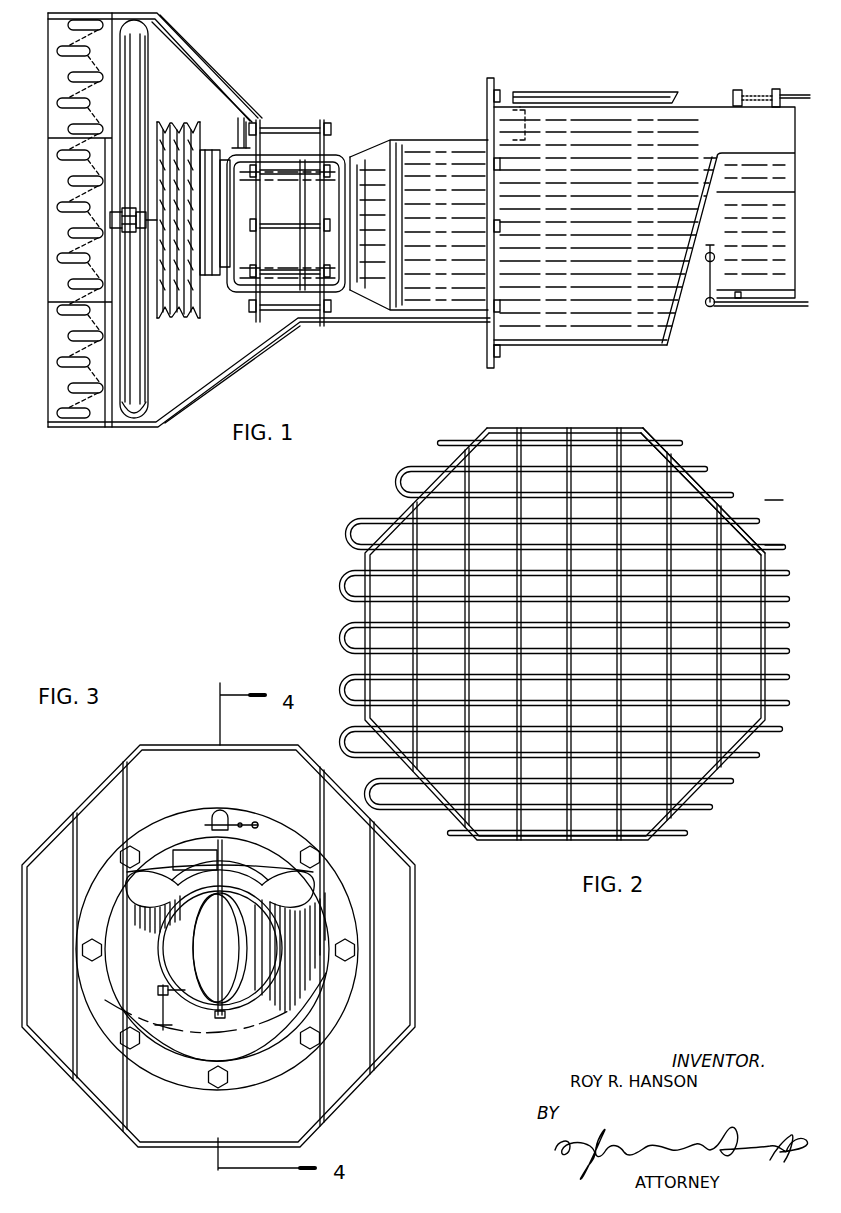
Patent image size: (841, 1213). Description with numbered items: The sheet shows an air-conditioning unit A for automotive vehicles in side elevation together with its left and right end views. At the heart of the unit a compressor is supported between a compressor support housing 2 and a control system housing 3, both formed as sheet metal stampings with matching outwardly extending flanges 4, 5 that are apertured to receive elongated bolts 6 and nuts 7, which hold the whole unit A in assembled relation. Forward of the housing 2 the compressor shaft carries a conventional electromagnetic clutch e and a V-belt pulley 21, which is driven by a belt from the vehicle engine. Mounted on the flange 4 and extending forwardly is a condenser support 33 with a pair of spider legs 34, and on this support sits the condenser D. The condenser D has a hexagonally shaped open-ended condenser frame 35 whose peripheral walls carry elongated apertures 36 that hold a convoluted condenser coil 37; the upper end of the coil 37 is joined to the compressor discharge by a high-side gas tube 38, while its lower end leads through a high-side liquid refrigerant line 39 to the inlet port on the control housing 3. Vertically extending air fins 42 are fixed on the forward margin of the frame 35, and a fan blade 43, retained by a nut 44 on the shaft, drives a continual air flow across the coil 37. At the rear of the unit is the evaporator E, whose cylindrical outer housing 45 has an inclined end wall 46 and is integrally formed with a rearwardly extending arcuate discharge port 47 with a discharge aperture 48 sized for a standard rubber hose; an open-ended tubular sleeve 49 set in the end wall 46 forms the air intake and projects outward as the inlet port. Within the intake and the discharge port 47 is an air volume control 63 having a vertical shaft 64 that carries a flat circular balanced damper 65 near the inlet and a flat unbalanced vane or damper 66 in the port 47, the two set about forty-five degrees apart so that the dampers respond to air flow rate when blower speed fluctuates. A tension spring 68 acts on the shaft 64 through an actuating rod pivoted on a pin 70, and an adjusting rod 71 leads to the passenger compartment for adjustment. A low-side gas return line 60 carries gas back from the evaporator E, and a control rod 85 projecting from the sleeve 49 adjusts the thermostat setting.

In FIG. 1, the compressor support housing 2 is at (237, 290).
In FIG. 1, the control system housing 3 is at (423, 138).
In FIG. 1, the outwardly extending flange 4 is at (258, 120).
In FIG. 1, the outwardly extending flange 5 is at (319, 120).
In FIG. 1, the elongated bolts 6 is at (291, 128).
In FIG. 1, the nuts 7 is at (330, 127).
In FIG. 1, the V-belt pulley 21 is at (173, 307).
In FIG. 1, the condenser support 33 is at (98, 427).
In FIG. 2, the condenser support 33 is at (498, 424).
In FIG. 3, the condenser support 33 is at (363, 1087).
In FIG. 1, the spider legs 34 is at (243, 100).
In FIG. 3, the spider legs 34 is at (213, 1127).
In FIG. 2, the condenser frame 35 is at (557, 428).
In FIG. 1, the elongated apertures 36 is at (127, 427).
In FIG. 2, the elongated apertures 36 is at (685, 467).
In FIG. 2, the convoluted condenser coil 37 is at (733, 497).
In FIG. 1, the high-side gas tube 38 is at (215, 62).
In FIG. 1, the high-side liquid refrigerant line 39 is at (217, 373).
In FIG. 2, the air fins 42 is at (517, 437).
In FIG. 1, the fan blade 43 is at (147, 393).
In FIG. 1, the nut 44 is at (140, 243).
In FIG. 1, the cylindrical outer housing 45 is at (615, 322).
In FIG. 3, the cylindrical outer housing 45 is at (245, 967).
In FIG. 1, the inclined end wall 46 is at (678, 315).
In FIG. 3, the inclined end wall 46 is at (313, 993).
In FIG. 1, the discharge port 47 is at (743, 132).
In FIG. 3, the discharge port 47 is at (307, 877).
In FIG. 3, the discharge aperture 48 is at (270, 857).
In FIG. 1, the tubular sleeve 49 is at (767, 275).
In FIG. 3, the tubular sleeve 49 is at (160, 977).
In FIG. 1, the low-side gas return line 60 is at (600, 92).
In FIG. 3, the air volume control 63 is at (313, 997).
In FIG. 1, the vertical shaft 64 is at (735, 97).
In FIG. 3, the vertical shaft 64 is at (192, 852).
In FIG. 3, the flat circular balanced damper 65 is at (197, 948).
In FIG. 3, the flat unbalanced vane or damper 66 is at (212, 862).
In FIG. 1, the tension spring 68 is at (757, 94).
In FIG. 1, the pin 70 is at (774, 89).
In FIG. 1, the adjusting rod 71 is at (790, 94).
In FIG. 1, the control rod 85 is at (707, 255).
In FIG. 3, the control rod 85 is at (195, 990).
In FIG. 1, the air-conditioning unit A is at (372, 93).
In FIG. 1, the condenser D is at (65, 433).
In FIG. 2, the condenser D is at (625, 424).
In FIG. 1, the evaporator E is at (685, 102).
In FIG. 3, the evaporator E is at (335, 923).
In FIG. 1, the electromagnetic clutch e is at (183, 125).